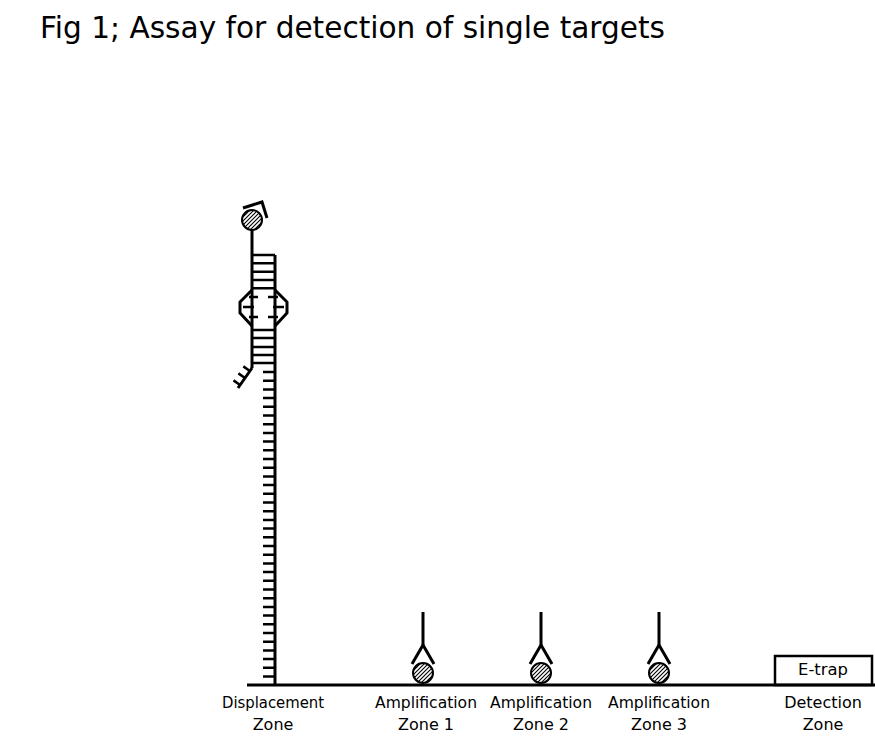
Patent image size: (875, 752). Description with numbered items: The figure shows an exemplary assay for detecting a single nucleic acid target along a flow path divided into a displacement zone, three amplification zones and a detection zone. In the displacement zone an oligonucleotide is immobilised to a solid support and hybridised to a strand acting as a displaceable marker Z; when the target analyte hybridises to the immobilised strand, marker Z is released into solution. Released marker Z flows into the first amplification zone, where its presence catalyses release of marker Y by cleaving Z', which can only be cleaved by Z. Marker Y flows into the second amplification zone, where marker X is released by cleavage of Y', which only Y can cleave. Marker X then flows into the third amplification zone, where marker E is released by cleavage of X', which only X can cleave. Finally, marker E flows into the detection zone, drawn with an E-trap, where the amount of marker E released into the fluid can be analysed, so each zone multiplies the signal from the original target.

The displaceable marker Z is at (262, 202).
The marker Y is at (423, 576).
The marker X is at (541, 576).
The marker E is at (659, 576).